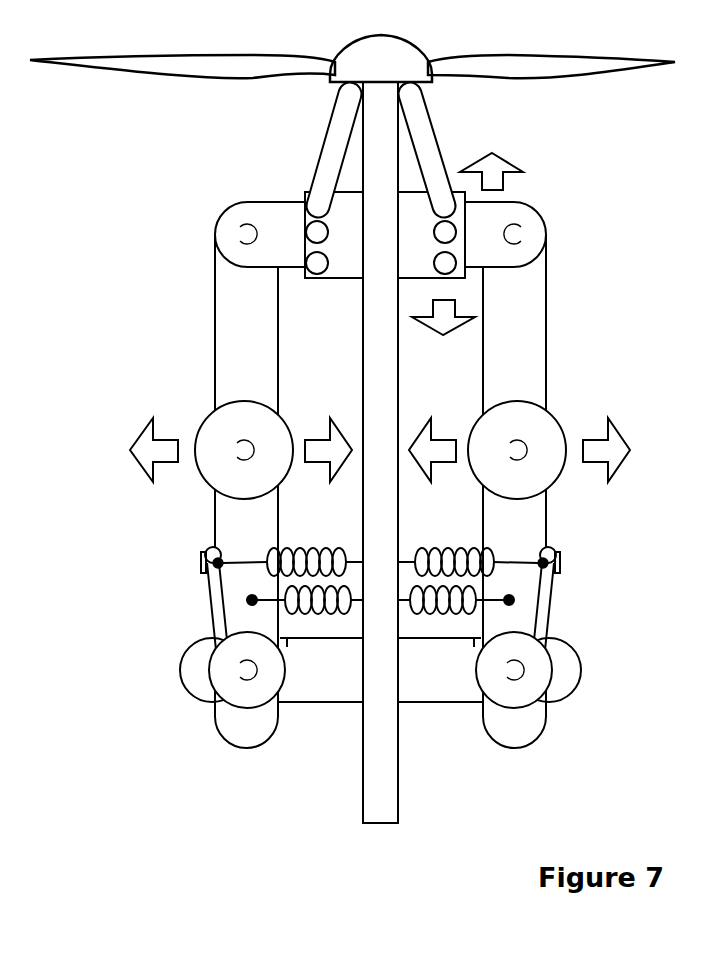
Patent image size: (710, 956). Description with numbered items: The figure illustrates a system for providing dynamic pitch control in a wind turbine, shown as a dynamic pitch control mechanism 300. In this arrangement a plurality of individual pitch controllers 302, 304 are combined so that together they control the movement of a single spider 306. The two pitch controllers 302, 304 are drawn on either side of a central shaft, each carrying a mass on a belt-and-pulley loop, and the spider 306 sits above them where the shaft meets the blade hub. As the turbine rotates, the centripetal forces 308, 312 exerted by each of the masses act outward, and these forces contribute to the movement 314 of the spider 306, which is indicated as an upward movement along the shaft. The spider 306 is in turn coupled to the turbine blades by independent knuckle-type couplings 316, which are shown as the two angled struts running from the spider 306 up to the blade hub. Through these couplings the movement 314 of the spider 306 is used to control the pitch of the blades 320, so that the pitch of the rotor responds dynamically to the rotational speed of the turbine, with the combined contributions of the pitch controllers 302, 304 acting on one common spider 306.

The dynamic pitch control mechanism 300 is at (489, 803).
The individual pitch controller 302 is at (226, 350).
The individual pitch controller 304 is at (535, 350).
The spider 306 is at (303, 217).
The centripetal force 308 is at (134, 450).
The centripetal force 312 is at (626, 450).
The movement of the spider 314 is at (512, 171).
The knuckle-type coupling 316 is at (432, 118).
The turbine blade 320 is at (633, 78).